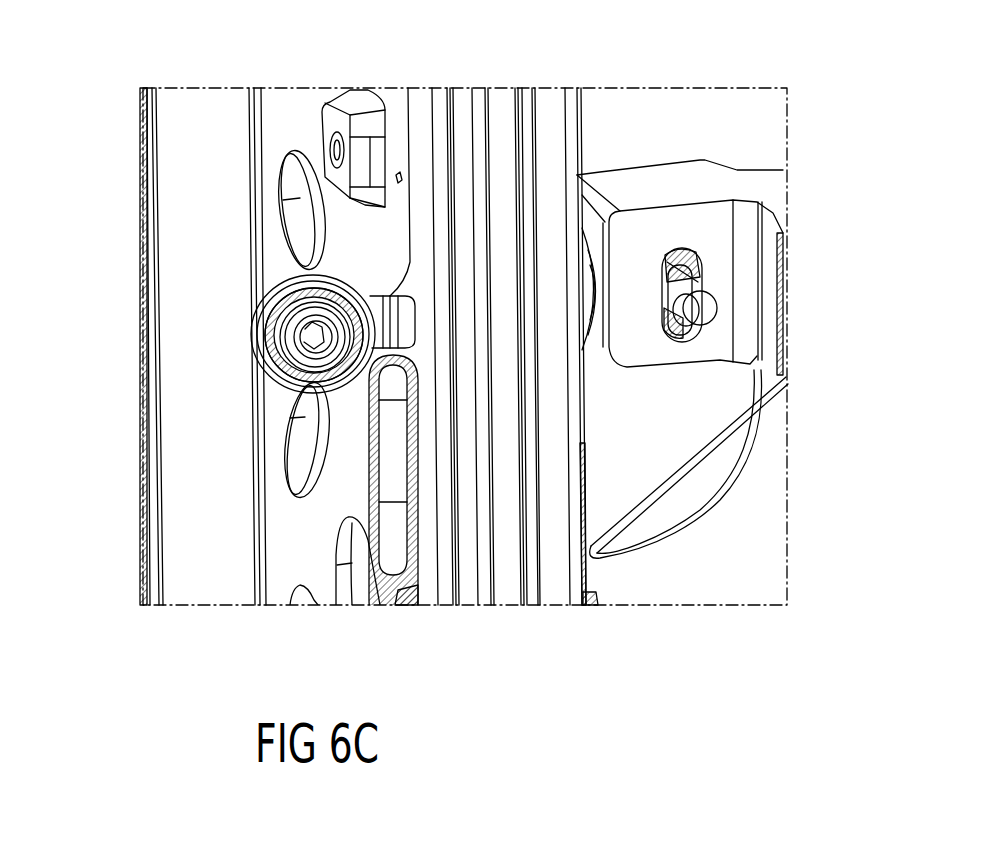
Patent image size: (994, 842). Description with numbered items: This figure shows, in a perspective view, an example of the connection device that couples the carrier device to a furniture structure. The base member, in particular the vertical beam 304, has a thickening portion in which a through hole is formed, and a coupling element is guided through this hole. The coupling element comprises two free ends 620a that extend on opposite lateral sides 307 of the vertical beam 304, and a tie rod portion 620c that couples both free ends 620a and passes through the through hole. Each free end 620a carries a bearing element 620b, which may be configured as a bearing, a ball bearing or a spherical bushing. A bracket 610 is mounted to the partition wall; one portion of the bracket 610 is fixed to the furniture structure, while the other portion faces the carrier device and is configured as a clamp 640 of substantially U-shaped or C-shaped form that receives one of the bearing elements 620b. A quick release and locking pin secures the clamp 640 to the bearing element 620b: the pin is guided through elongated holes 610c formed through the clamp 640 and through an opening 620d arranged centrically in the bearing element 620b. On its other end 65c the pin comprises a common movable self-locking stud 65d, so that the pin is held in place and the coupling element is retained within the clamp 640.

The vertical beam 304 is at (290, 112).
The lateral sides 307 is at (405, 602).
The bracket 610 is at (600, 172).
The elongated holes 610c is at (702, 272).
The free ends 620a is at (272, 376).
The bearing element 620b is at (275, 382).
The tie rod portion 620c is at (278, 300).
The opening 620d is at (315, 340).
The clamp 640 is at (773, 193).
The other end 65c is at (708, 315).
The self-locking stud 65d is at (668, 256).